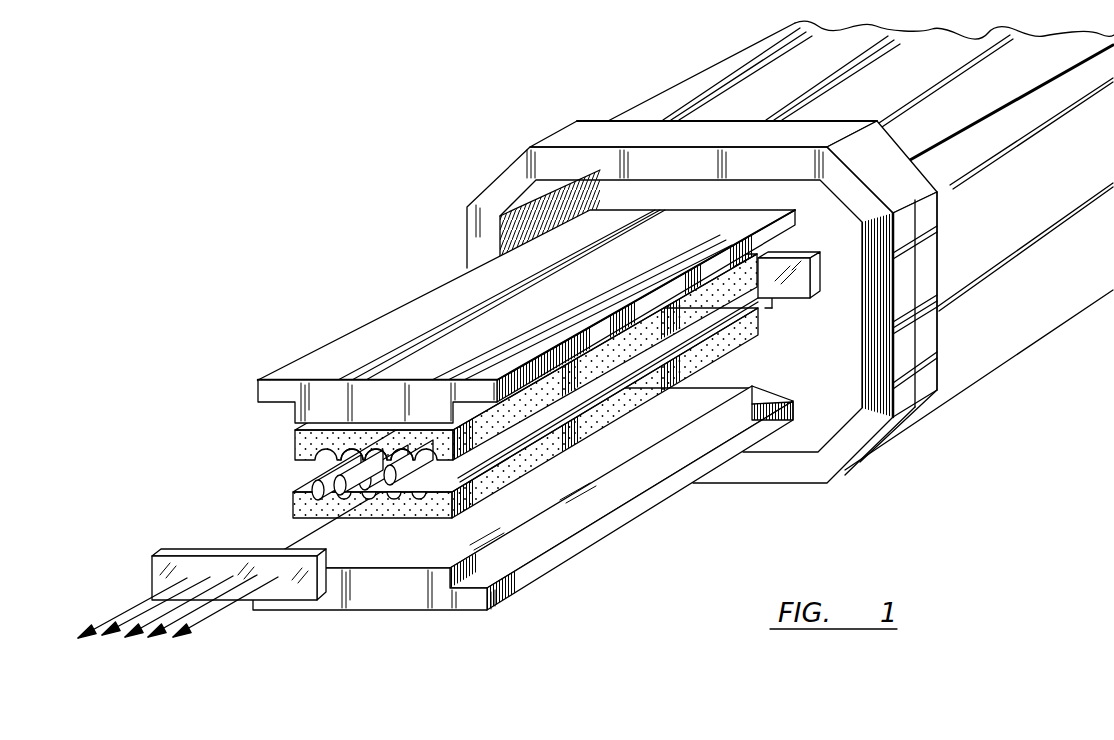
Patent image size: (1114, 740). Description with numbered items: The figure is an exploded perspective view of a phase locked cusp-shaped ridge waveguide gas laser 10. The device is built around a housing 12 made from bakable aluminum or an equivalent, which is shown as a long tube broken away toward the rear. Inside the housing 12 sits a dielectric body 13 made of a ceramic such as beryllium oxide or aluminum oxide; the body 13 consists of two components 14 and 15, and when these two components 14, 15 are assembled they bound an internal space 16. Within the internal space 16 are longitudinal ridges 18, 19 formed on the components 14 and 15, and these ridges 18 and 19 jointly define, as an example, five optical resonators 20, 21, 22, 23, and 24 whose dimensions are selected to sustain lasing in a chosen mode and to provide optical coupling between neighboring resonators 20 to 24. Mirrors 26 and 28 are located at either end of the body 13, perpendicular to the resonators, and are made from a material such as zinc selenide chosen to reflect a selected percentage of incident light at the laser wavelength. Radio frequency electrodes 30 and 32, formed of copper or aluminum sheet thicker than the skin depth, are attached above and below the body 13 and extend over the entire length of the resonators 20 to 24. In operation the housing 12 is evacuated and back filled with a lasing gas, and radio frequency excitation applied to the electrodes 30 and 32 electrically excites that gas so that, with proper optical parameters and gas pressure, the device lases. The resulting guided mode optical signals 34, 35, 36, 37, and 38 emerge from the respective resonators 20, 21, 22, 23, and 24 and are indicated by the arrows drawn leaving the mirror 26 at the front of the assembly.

The phase locked cusp-shaped ridge waveguide gas laser 10 is at (393, 95).
The housing 12 is at (730, 62).
The dielectric body 13 is at (772, 308).
The component 14 is at (775, 262).
The component 15 is at (742, 338).
The internal space 16 is at (300, 451).
The longitudinal ridge 18 is at (403, 451).
The longitudinal ridge 19 is at (313, 504).
The optical resonator 20 is at (296, 497).
The optical resonator 21 is at (343, 488).
The optical resonator 22 is at (371, 500).
The optical resonator 23 is at (406, 498).
The optical resonator 24 is at (421, 497).
The mirror 26 is at (156, 555).
The mirror 28 is at (790, 300).
The radio frequency electrode 30 is at (407, 300).
The radio frequency electrode 32 is at (680, 490).
The guided mode optical signal 34 is at (118, 618).
The guided mode optical signal 35 is at (112, 642).
The guided mode optical signal 36 is at (135, 645).
The guided mode optical signal 37 is at (158, 642).
The guided mode optical signal 38 is at (205, 642).